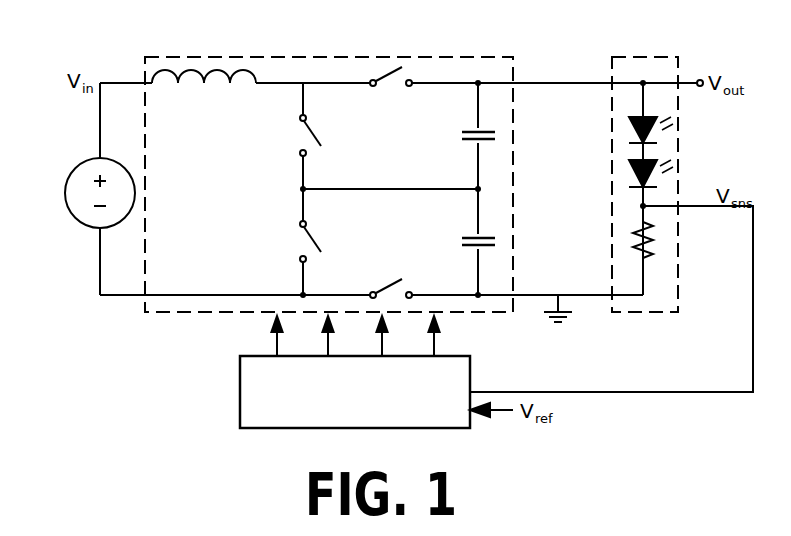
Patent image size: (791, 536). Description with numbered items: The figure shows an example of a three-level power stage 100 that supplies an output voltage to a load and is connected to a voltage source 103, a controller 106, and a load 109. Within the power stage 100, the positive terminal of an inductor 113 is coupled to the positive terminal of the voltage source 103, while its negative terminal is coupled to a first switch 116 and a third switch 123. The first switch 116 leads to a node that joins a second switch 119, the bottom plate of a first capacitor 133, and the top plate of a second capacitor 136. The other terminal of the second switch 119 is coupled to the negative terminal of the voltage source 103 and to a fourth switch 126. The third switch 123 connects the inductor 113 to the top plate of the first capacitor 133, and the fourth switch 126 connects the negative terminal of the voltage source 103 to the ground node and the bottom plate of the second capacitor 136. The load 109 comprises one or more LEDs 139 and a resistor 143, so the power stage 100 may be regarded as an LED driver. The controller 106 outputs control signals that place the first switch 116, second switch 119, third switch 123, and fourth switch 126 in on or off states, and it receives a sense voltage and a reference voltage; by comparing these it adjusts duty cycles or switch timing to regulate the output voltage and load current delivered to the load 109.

The power stage 100 is at (207, 313).
The voltage source 103 is at (65, 190).
The controller 106 is at (355, 370).
The load 109 is at (665, 312).
The inductor 113 is at (240, 62).
The first switch 116 is at (313, 135).
The second switch 119 is at (313, 242).
The third switch 123 is at (390, 67).
The fourth switch 126 is at (396, 278).
The first capacitor 133 is at (493, 132).
The second capacitor 136 is at (490, 238).
The LEDs 139 is at (648, 138).
The resistor 143 is at (647, 257).